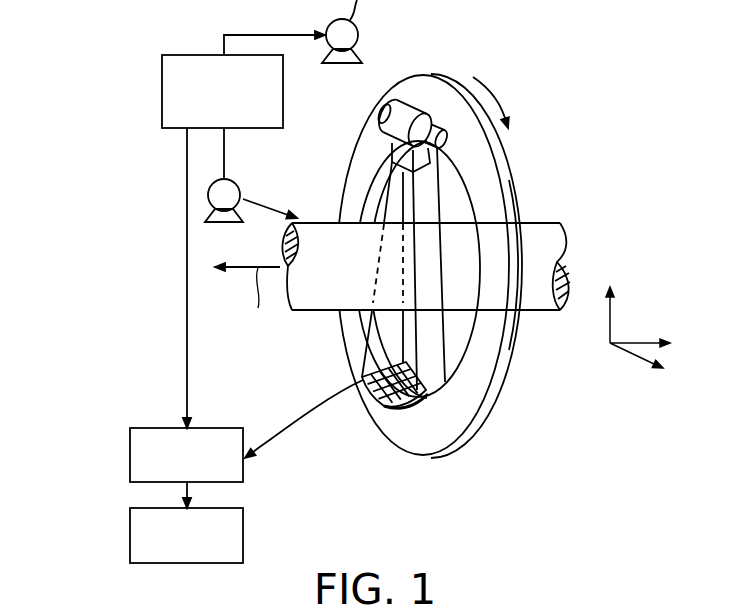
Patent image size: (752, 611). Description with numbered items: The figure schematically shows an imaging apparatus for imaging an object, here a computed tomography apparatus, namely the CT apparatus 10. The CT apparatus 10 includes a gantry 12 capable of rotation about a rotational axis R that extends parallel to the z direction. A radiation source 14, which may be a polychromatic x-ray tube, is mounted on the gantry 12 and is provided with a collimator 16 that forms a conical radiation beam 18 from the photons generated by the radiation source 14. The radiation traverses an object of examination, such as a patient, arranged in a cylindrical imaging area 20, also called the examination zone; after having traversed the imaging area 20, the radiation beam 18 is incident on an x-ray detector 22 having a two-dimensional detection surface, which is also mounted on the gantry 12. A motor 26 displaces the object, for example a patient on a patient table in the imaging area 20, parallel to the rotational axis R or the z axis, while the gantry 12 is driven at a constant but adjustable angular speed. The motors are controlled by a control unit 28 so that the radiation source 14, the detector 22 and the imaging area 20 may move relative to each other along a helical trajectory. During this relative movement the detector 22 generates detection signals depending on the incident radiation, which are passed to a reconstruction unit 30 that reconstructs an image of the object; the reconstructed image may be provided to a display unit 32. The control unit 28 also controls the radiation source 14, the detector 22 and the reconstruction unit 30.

The CT apparatus 10 is at (540, 92).
The gantry 12 is at (472, 395).
The radiation source 14 is at (405, 108).
The collimator 16 is at (430, 160).
The radiation beam 18 is at (418, 353).
The imaging area 20 is at (321, 222).
The x-ray detector 22 is at (388, 410).
The motor 26 is at (240, 190).
The control unit 28 is at (176, 55).
The reconstruction unit 30 is at (130, 453).
The display unit 32 is at (130, 535).